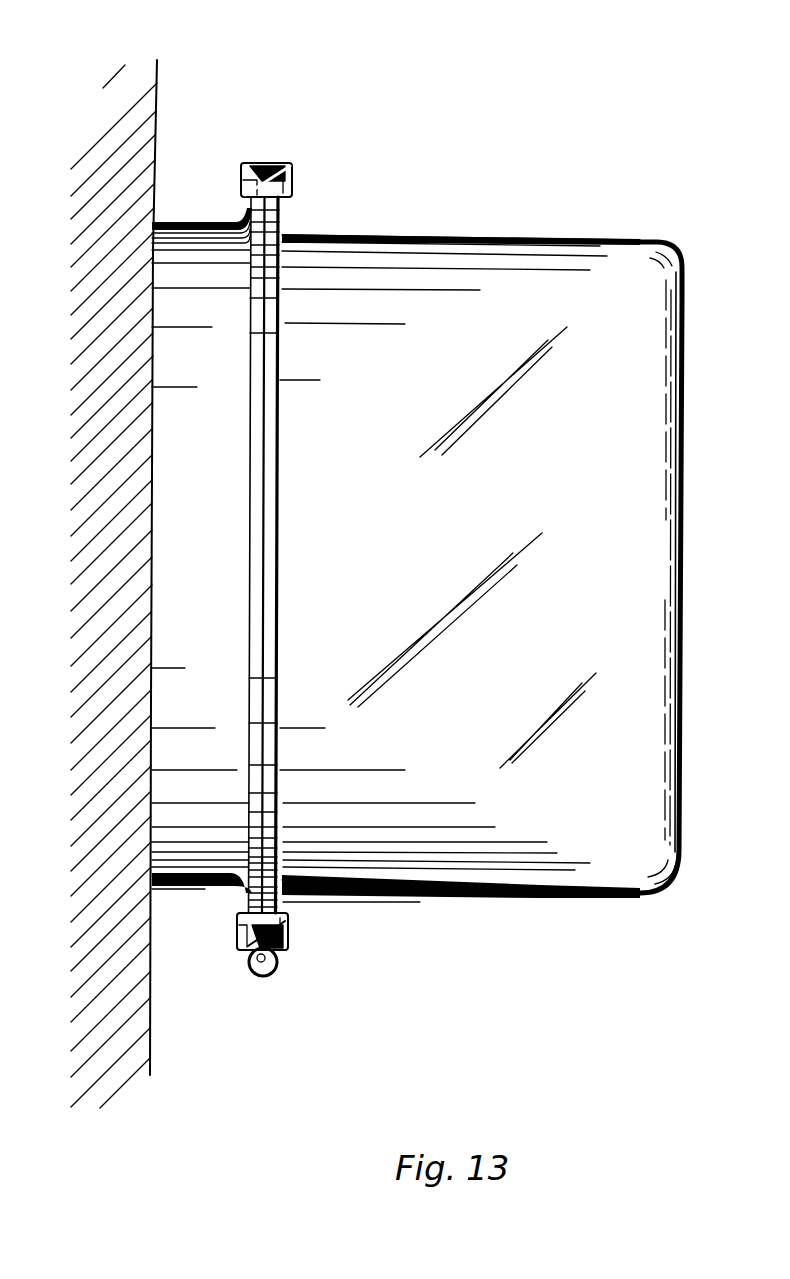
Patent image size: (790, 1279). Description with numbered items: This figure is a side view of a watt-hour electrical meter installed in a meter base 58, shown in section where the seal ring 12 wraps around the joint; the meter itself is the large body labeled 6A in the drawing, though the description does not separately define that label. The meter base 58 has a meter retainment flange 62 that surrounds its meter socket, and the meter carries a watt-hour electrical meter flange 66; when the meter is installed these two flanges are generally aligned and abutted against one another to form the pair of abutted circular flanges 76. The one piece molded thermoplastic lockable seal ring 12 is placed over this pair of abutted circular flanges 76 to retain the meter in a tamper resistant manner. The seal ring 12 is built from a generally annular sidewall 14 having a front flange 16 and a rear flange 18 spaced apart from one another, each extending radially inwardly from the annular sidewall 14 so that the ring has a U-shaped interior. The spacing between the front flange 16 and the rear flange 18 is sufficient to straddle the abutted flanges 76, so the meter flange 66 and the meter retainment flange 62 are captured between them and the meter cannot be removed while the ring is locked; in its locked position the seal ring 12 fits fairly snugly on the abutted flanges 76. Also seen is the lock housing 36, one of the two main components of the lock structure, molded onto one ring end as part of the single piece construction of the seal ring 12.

The meter base 58 is at (150, 88).
The panel 6A is at (580, 263).
The meter retainment flange 62 is at (249, 212).
The abutted circular flanges 76 is at (280, 233).
The watt-hour electrical meter flange 66 is at (280, 225).
The annular sidewall 14 is at (280, 162).
The rear flange 18 is at (237, 187).
The front flange 16 is at (293, 181).
The lockable seal ring 12 is at (288, 158).
The lock housing 36 is at (273, 970).